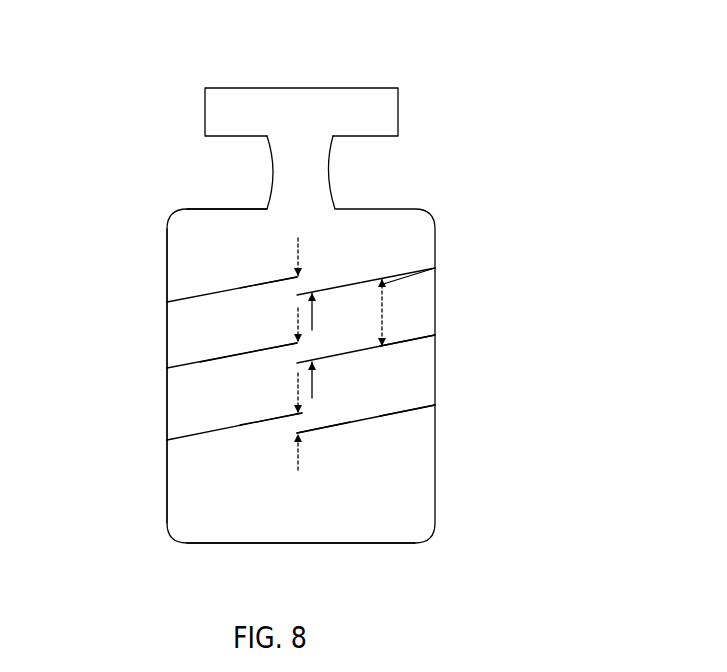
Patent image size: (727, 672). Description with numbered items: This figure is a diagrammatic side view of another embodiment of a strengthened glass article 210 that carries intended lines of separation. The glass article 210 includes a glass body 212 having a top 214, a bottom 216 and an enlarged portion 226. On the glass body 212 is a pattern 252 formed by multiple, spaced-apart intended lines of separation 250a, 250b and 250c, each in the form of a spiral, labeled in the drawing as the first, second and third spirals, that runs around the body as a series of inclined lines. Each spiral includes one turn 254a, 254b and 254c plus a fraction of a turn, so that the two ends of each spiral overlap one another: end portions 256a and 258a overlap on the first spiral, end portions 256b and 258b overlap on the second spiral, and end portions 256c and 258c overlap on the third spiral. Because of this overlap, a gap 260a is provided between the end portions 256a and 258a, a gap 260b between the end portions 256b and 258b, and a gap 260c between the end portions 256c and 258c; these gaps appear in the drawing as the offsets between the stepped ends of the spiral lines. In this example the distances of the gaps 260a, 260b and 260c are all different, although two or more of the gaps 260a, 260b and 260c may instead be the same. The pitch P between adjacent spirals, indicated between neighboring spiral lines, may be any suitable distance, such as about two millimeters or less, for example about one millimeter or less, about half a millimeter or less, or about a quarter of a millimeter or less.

The glass article 210 is at (348, 271).
The glass body 212 is at (450, 488).
The top 214 is at (362, 70).
The bottom 216 is at (388, 560).
The enlarged portion 226 is at (158, 495).
The pattern 252 is at (208, 227).
The intended line of separation 250a is at (183, 293).
The intended line of separation 250b is at (187, 363).
The intended line of separation 250c is at (188, 437).
The turn 254a is at (448, 258).
The turn 254b is at (450, 330).
The turn 254c is at (448, 402).
The end portion 256a is at (297, 278).
The end portion 256b is at (212, 363).
The end portion 256c is at (272, 420).
The end portion 258a is at (316, 290).
The end portion 258b is at (312, 364).
The end portion 258c is at (337, 430).
The gap 260a is at (296, 250).
The gap 260b is at (297, 394).
The gap 260c is at (300, 455).
The pitch P is at (383, 310).